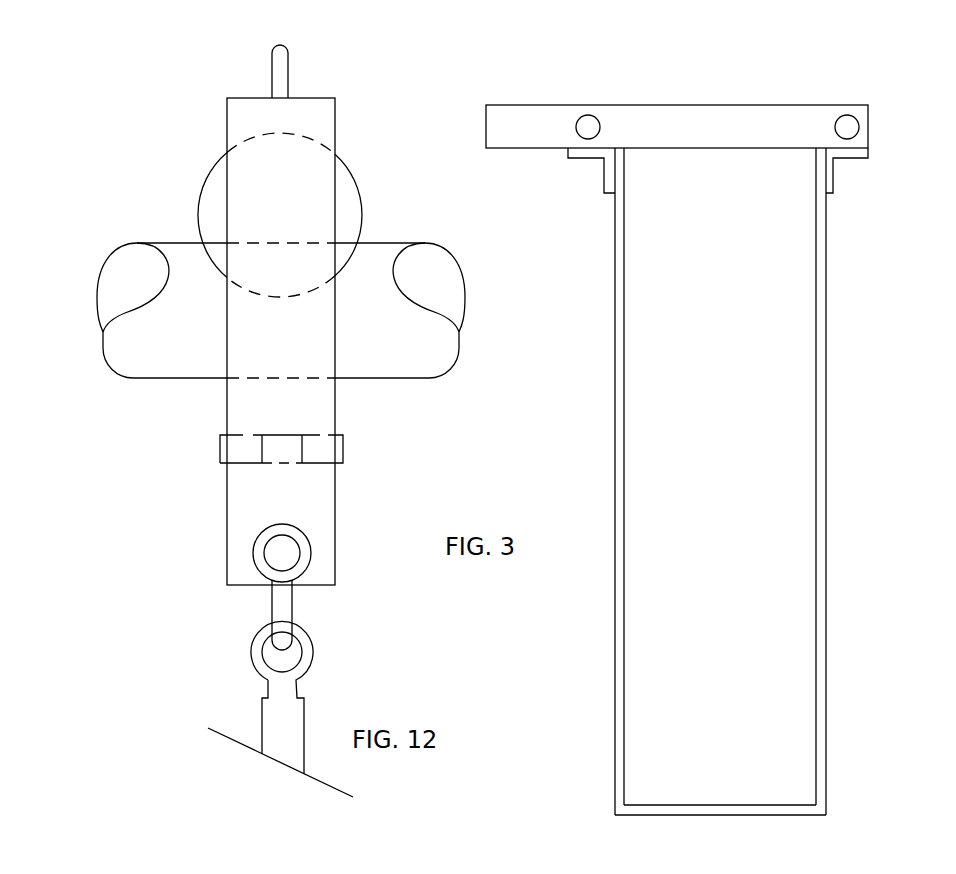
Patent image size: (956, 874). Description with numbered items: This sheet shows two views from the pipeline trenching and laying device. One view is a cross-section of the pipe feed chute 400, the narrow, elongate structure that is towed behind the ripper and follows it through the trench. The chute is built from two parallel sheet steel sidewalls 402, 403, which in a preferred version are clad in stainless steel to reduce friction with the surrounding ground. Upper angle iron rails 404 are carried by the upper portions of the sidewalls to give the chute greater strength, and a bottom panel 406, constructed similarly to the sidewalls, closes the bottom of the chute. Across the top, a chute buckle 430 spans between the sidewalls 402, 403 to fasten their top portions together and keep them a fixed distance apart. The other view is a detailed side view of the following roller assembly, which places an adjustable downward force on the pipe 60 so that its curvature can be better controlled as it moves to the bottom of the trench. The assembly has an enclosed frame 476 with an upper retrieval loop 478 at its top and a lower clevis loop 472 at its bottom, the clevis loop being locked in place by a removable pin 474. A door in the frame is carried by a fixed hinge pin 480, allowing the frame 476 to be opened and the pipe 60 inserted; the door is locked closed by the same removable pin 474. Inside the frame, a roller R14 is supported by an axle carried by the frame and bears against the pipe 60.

In FIG. 12, the pipe 60 is at (125, 267).
In FIG. 12, the roller R14 is at (213, 192).
In FIG. 12, the lower clevis loop 472 is at (278, 600).
In FIG. 12, the removable pin 474 is at (278, 553).
In FIG. 12, the enclosed frame 476 is at (340, 410).
In FIG. 12, the upper retrieval loop 478 is at (295, 69).
In FIG. 12, the fixed hinge pin 480 is at (207, 450).
In FIG. 3, the pipe feed chute 400 is at (562, 608).
In FIG. 3, the sidewall 402 is at (805, 342).
In FIG. 3, the sidewall 403 is at (607, 416).
In FIG. 3, the upper angle iron rail 404 is at (595, 171).
In FIG. 3, the bottom panel 406 is at (726, 798).
In FIG. 3, the chute buckle 430 is at (536, 85).